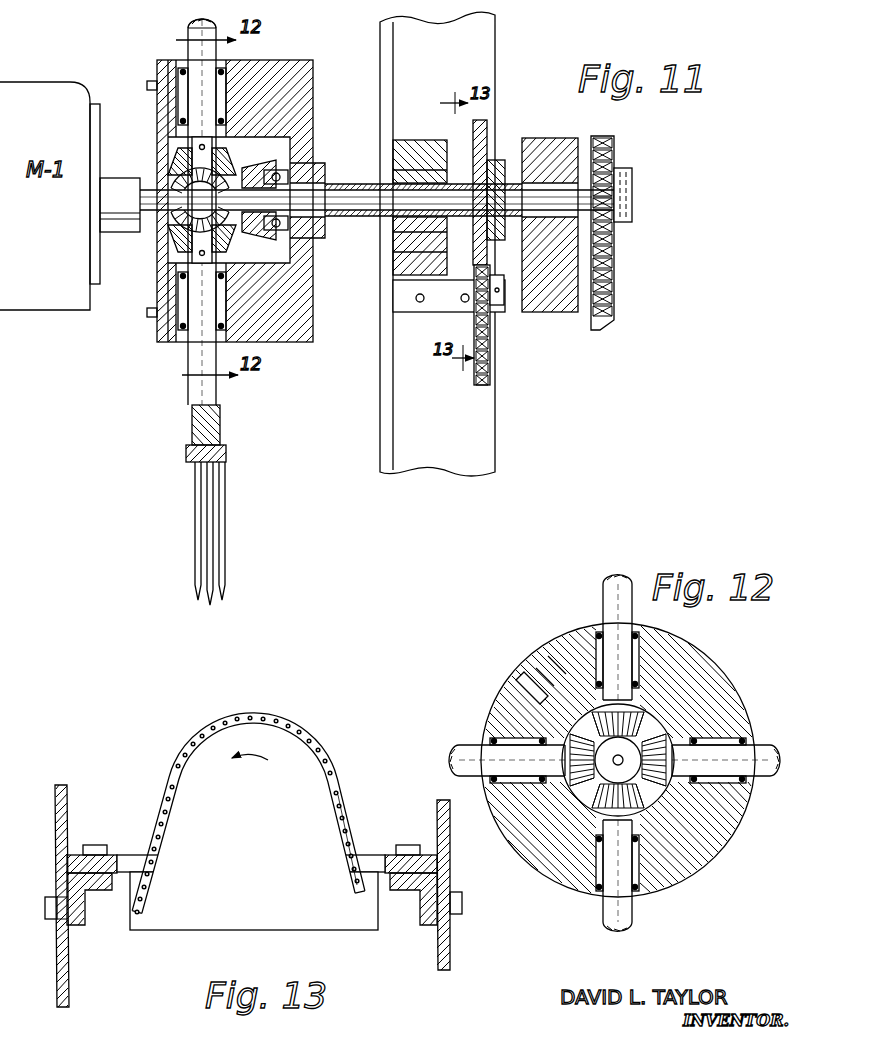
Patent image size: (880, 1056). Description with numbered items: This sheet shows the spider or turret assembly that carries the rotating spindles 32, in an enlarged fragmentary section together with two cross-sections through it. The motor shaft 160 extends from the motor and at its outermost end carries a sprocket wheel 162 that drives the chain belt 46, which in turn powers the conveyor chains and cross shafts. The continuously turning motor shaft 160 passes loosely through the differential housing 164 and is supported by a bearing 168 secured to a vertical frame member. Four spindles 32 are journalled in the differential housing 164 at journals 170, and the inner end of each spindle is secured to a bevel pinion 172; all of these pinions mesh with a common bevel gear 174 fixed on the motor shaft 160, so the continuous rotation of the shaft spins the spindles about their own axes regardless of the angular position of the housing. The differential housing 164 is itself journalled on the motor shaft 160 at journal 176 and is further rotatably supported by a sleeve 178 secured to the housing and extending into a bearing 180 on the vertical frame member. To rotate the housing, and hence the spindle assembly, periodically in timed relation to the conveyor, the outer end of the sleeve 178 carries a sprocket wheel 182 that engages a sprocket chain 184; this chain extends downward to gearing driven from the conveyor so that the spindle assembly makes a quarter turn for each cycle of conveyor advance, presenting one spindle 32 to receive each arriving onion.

In FIG. 11, the spindle 32 is at (188, 30).
In FIG. 12, the spindle 32 is at (603, 600).
In FIG. 11, the chain belt 46 is at (614, 270).
In FIG. 11, the motor shaft 160 is at (146, 196).
In FIG. 13, the motor shaft 160 is at (266, 800).
In FIG. 11, the sprocket wheel 162 is at (632, 171).
In FIG. 11, the differential housing 164 is at (308, 92).
In FIG. 12, the differential housing 164 is at (722, 686).
In FIG. 11, the bearing 168 is at (555, 144).
In FIG. 11, the spindle journal 170 is at (186, 62).
In FIG. 12, the spindle journal 170 is at (752, 773).
In FIG. 11, the bevel pinion 172 is at (215, 157).
In FIG. 11, the bevel gear 174 is at (240, 230).
In FIG. 11, the housing journal 176 is at (318, 165).
In FIG. 11, the sleeve 178 is at (352, 217).
In FIG. 13, the sleeve 178 is at (247, 814).
In FIG. 11, the bearing 180 is at (440, 148).
In FIG. 11, the sprocket wheel 182 is at (487, 145).
In FIG. 13, the sprocket wheel 182 is at (300, 760).
In FIG. 11, the sprocket chain 184 is at (490, 358).
In FIG. 13, the sprocket chain 184 is at (348, 842).